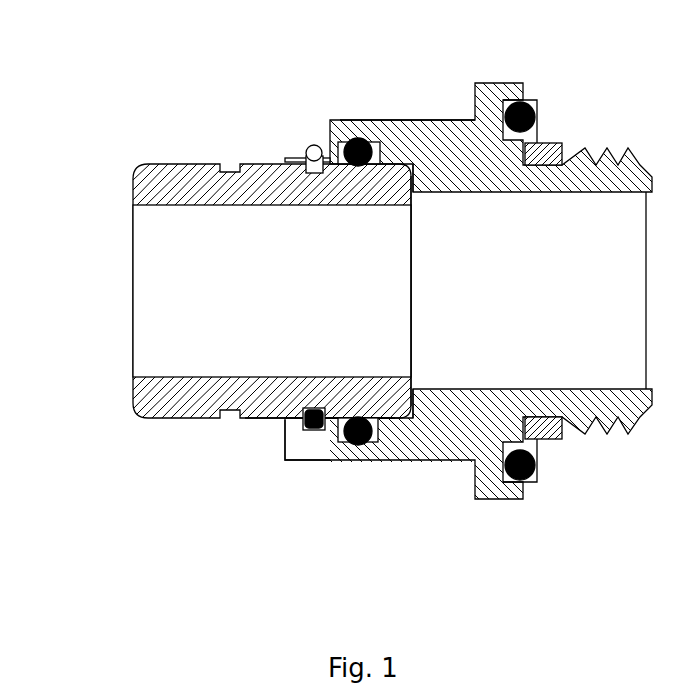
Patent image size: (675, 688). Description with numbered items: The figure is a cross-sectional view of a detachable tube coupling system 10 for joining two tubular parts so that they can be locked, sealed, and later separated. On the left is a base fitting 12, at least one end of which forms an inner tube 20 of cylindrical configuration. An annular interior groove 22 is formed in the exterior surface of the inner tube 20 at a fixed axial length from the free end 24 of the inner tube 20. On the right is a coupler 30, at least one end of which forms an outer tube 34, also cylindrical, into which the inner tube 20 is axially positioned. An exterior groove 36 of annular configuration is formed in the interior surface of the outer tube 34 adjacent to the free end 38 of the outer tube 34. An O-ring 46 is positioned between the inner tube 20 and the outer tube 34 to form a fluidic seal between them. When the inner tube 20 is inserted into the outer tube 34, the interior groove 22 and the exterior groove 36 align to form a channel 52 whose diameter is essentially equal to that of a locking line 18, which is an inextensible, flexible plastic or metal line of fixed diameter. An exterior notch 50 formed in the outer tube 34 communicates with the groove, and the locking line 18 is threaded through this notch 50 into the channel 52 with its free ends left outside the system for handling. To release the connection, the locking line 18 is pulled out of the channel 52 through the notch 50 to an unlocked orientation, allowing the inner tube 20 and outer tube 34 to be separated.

The detachable tube coupling system 10 is at (88, 90).
The base fitting 12 is at (157, 420).
The locking line 18 is at (316, 146).
The inner tube 20 is at (267, 418).
The annular interior groove 22 is at (311, 410).
The free end 24 is at (410, 290).
The coupler 30 is at (427, 460).
The outer tube 34 is at (443, 120).
The exterior groove 36 is at (308, 430).
The free end 38 is at (285, 455).
The O-ring 46 is at (357, 445).
The exterior notch 50 is at (304, 158).
The channel 52 is at (318, 170).